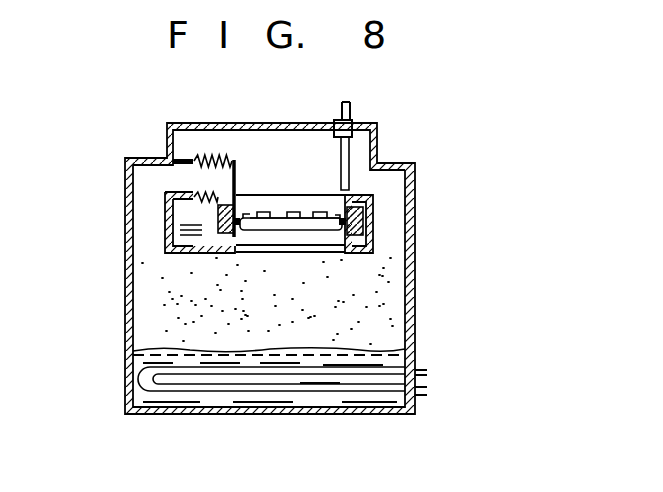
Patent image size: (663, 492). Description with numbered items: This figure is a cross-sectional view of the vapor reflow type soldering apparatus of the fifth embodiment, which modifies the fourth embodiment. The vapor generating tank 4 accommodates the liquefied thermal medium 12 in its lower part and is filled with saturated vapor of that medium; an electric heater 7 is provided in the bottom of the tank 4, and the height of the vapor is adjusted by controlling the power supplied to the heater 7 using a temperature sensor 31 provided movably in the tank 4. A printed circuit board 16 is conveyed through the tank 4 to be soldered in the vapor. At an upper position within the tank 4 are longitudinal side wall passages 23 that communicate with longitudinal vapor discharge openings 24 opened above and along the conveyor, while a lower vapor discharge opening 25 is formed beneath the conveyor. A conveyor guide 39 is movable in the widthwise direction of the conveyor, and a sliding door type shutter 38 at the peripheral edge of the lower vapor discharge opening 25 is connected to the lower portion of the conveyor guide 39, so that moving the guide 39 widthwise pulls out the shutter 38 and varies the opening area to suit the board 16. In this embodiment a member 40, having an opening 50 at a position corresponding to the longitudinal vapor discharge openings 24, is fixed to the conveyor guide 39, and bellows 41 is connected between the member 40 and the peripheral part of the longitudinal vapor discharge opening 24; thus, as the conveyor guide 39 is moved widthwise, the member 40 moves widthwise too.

The vapor generating tank 4 is at (125, 171).
The electric heater 7 is at (415, 366).
The liquefied thermal medium 12 is at (143, 397).
The printed circuit board 16 is at (316, 212).
The longitudinal side wall passage 23 is at (390, 219).
The longitudinal vapor discharge opening 24 is at (358, 180).
The lower vapor discharge opening 25 is at (330, 252).
The temperature sensor 31 is at (348, 112).
The sliding door type shutter 38 is at (217, 253).
The conveyor guide 39 is at (237, 228).
The member 40 is at (233, 170).
The bellows 41 is at (208, 158).
The opening 50 is at (232, 183).